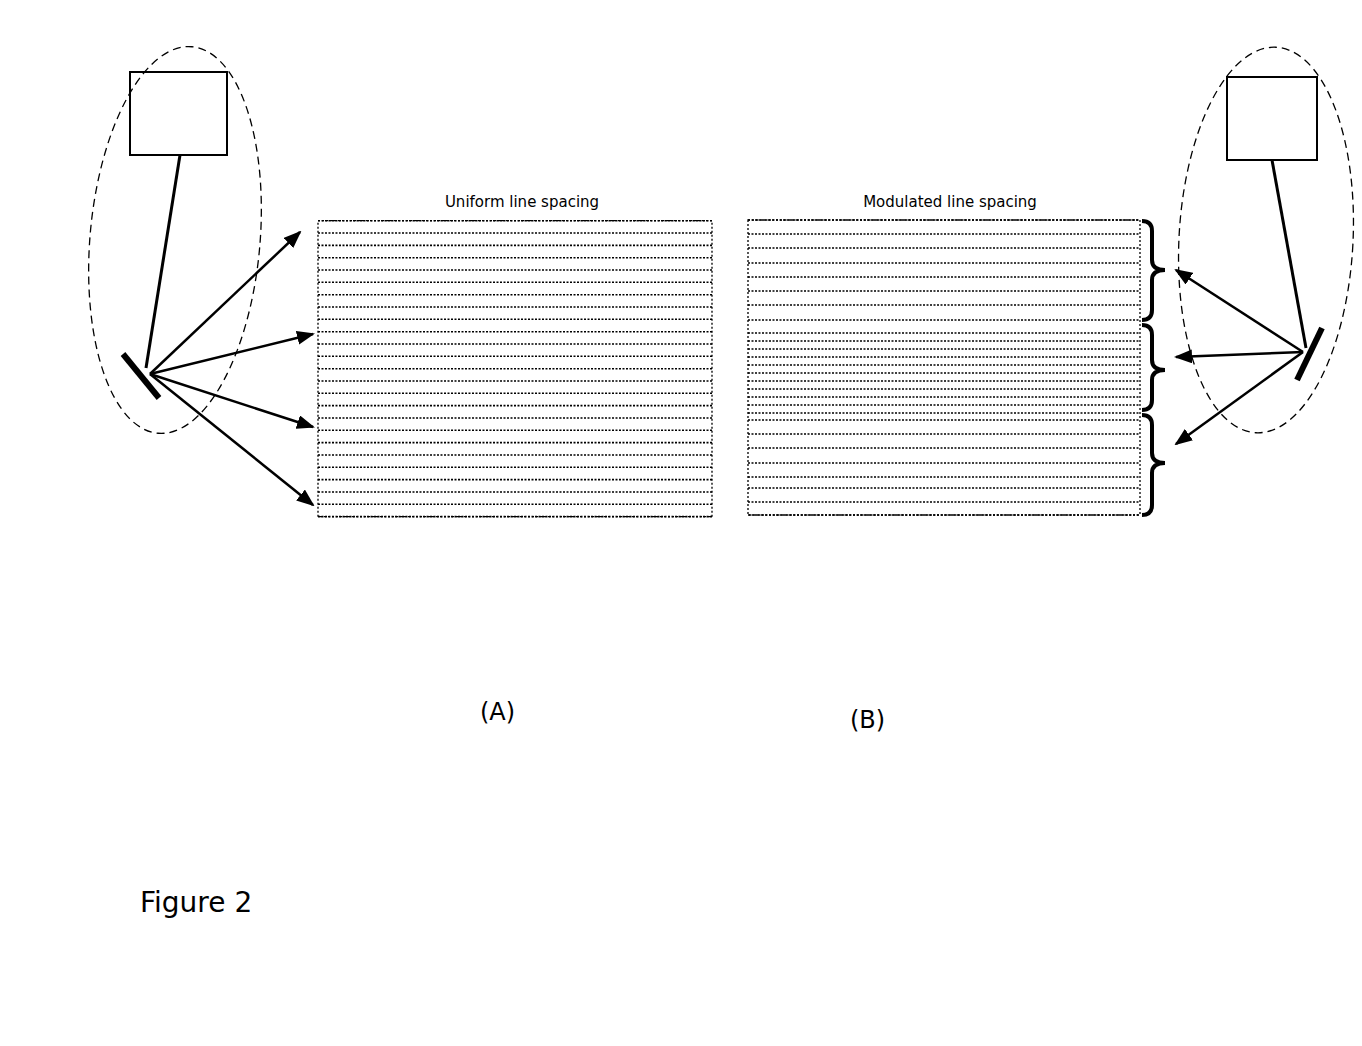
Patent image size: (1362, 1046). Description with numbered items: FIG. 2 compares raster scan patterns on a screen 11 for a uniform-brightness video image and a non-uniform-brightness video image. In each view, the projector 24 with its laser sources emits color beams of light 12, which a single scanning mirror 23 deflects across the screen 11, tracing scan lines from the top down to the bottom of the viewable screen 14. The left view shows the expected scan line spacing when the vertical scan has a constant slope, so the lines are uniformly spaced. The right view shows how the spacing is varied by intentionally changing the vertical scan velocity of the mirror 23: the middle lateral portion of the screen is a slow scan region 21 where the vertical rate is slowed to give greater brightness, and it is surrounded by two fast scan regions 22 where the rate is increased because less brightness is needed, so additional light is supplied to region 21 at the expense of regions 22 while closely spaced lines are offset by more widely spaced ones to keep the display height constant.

The screen 11 is at (410, 481).
The beams of light 12 is at (207, 420).
The bottom of the viewable screen 14 is at (645, 517).
The slow scan region 21 is at (1226, 408).
The fast scan regions 22 is at (1153, 218).
The scanning mirror 23 is at (147, 402).
The projector 24 is at (232, 102).